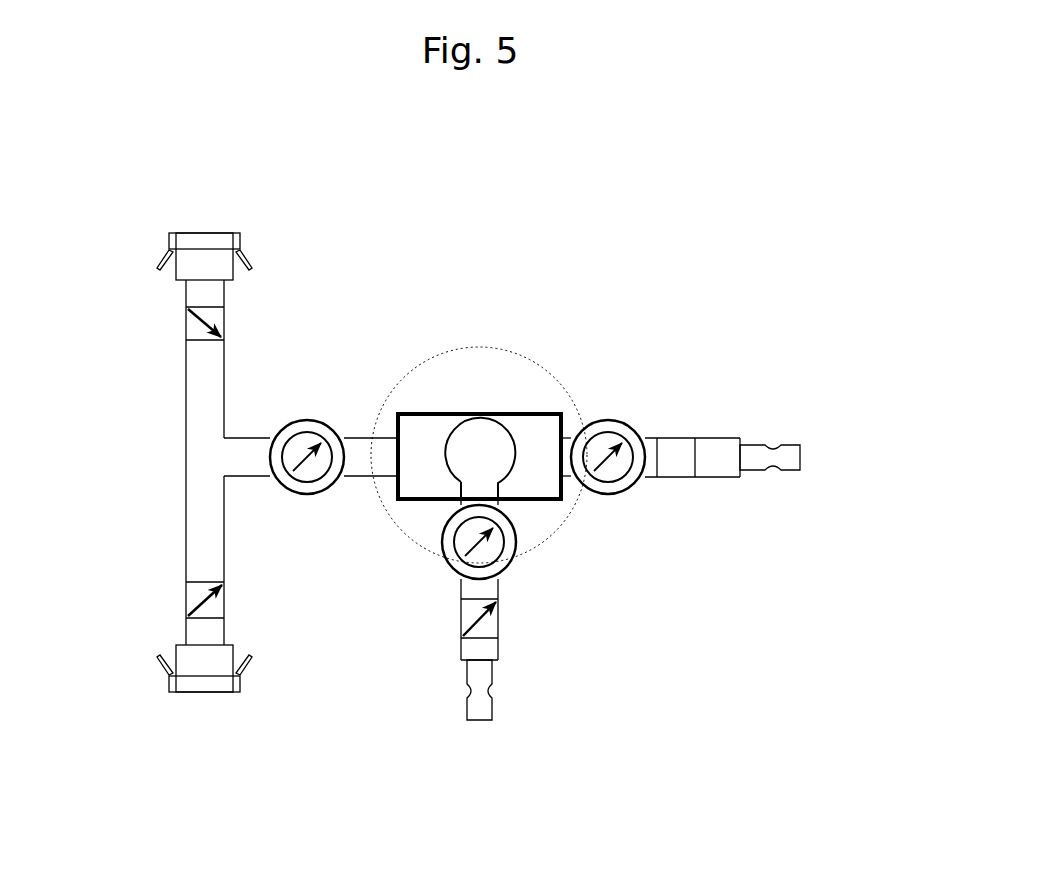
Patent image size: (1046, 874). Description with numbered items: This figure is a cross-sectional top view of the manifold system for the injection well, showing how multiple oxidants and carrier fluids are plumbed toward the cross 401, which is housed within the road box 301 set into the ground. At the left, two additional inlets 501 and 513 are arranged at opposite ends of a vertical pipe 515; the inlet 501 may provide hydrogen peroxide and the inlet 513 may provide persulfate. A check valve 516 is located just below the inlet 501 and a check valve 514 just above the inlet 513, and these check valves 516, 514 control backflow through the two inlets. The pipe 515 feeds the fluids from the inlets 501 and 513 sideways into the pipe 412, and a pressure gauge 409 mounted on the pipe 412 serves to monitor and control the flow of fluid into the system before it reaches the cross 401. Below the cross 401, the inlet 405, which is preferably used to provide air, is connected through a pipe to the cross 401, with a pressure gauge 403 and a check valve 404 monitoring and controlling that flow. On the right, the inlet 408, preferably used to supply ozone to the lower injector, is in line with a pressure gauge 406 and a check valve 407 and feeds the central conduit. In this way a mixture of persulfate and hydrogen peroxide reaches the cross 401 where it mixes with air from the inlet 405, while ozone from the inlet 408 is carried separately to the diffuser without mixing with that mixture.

The road box 301 is at (482, 347).
The cross 401 is at (560, 413).
The pressure gauge 403 is at (443, 553).
The check valve 404 is at (460, 620).
The inlet 405 is at (479, 720).
The pressure gauge 406 is at (620, 420).
The check valve 407 is at (658, 475).
The inlet 408 is at (800, 457).
The pressure gauge 409 is at (305, 420).
The pipe 412 is at (352, 477).
The inlet 501 is at (204, 233).
The inlet 513 is at (204, 692).
The check valve 514 is at (186, 601).
The pipe 515 is at (186, 462).
The check valve 516 is at (186, 328).